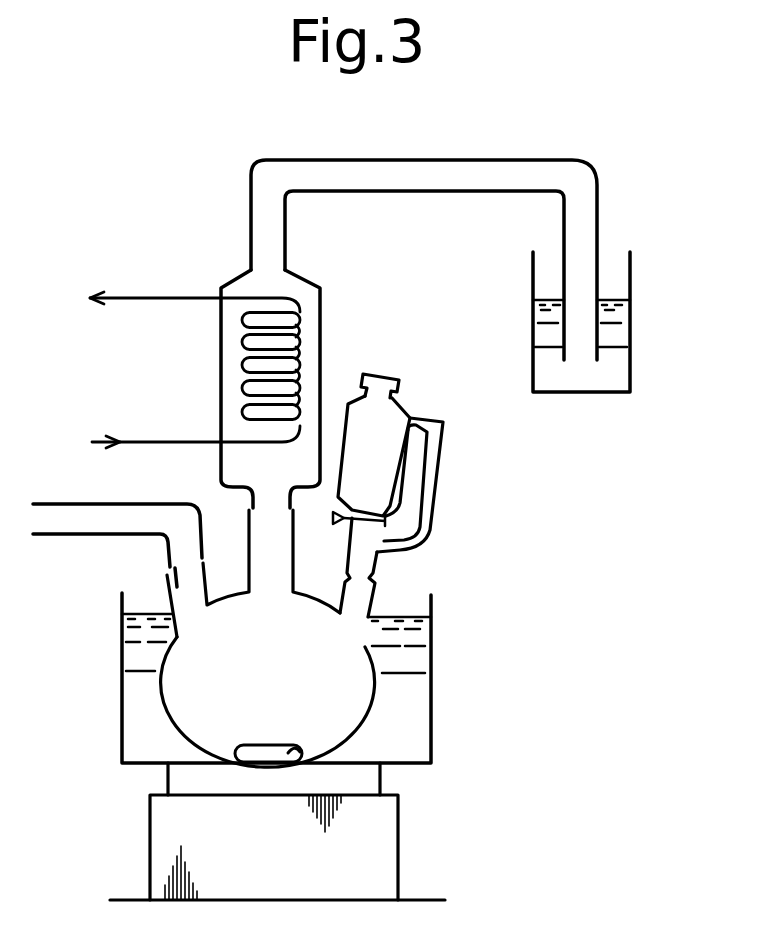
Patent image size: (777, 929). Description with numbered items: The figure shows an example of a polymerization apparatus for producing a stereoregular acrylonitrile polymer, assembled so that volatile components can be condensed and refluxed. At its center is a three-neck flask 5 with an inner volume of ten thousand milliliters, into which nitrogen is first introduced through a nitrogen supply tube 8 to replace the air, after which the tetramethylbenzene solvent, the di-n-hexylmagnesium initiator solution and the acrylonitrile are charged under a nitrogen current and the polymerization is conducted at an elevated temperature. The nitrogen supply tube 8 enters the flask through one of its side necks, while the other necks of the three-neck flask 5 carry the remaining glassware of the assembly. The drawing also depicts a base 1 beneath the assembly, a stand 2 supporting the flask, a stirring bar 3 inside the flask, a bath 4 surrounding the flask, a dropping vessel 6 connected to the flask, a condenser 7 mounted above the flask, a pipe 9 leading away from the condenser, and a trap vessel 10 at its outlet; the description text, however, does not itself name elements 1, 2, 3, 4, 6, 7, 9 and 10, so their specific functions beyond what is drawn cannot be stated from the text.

The heater base (magnetic stirrer/heating unit) 1 is at (387, 840).
The stand 2 is at (367, 788).
The stirring bar 3 is at (290, 753).
The heating bath 4 is at (417, 693).
The three-neck flask 5 is at (170, 716).
The dropping funnel 6 is at (387, 458).
The condenser 7 is at (230, 375).
The nitrogen supply tube 8 is at (84, 524).
The outlet pipe 9 is at (455, 168).
The trap vessel 10 is at (618, 370).